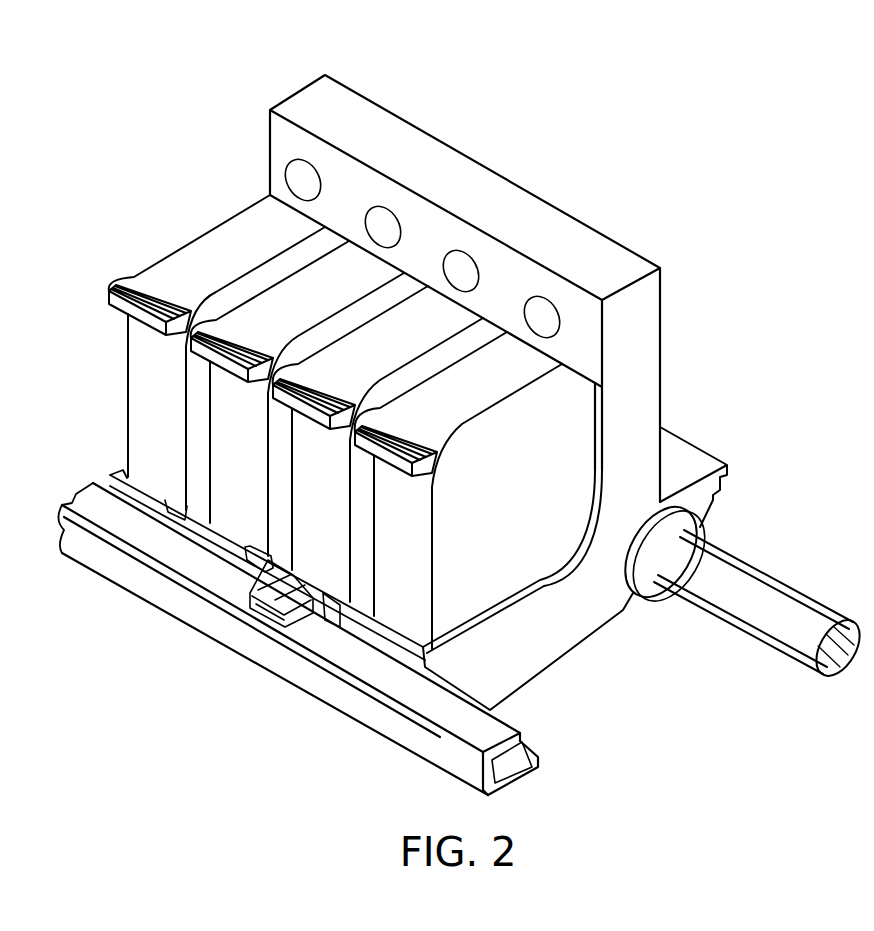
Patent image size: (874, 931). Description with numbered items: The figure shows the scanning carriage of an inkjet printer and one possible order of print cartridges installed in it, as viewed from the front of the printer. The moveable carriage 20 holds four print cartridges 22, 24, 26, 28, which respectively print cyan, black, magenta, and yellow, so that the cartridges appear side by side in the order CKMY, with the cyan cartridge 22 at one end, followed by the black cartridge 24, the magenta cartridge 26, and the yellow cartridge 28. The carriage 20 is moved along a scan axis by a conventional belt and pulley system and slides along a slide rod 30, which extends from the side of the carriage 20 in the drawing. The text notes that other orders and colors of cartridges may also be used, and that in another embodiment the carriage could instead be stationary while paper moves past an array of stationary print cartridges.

The carriage 20 is at (660, 373).
The print cartridge 22 is at (200, 250).
The print cartridge 24 is at (300, 290).
The print cartridge 26 is at (417, 317).
The print cartridge 28 is at (540, 372).
The slide rod 30 is at (750, 593).